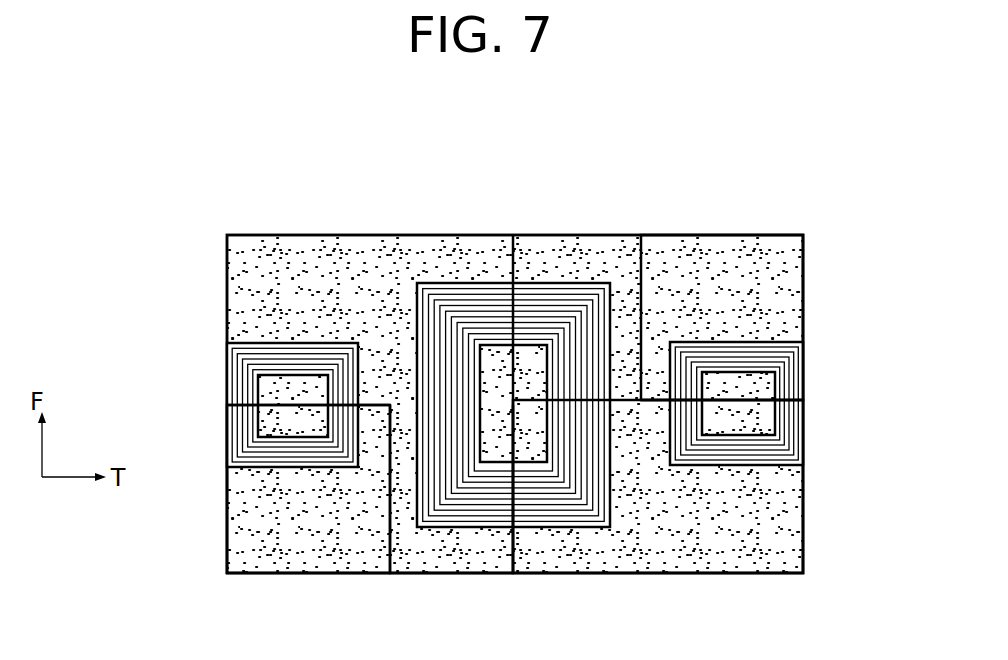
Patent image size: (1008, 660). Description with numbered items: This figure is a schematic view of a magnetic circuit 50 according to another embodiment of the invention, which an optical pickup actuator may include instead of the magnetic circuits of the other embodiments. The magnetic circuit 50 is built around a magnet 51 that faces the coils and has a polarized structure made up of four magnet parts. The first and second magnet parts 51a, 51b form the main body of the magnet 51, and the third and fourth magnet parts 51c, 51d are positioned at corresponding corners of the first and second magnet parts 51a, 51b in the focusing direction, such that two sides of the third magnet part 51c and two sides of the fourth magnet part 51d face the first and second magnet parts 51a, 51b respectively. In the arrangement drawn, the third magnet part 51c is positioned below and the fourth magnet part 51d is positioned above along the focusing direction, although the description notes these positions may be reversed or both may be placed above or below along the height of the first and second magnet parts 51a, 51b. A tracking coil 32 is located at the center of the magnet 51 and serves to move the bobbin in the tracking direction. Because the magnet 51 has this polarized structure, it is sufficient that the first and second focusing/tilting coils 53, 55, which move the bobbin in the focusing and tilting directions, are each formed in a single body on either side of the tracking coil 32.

The magnetic circuit 50 is at (314, 200).
The magnet 51 is at (385, 235).
The first magnet part 51a is at (703, 556).
The second magnet part 51b is at (440, 560).
The third magnet part 51c is at (745, 245).
The fourth magnet part 51d is at (262, 556).
The tracking coil 32 is at (477, 300).
The first focusing/tilting coil 53 is at (790, 444).
The second focusing/tilting coil 55 is at (240, 372).